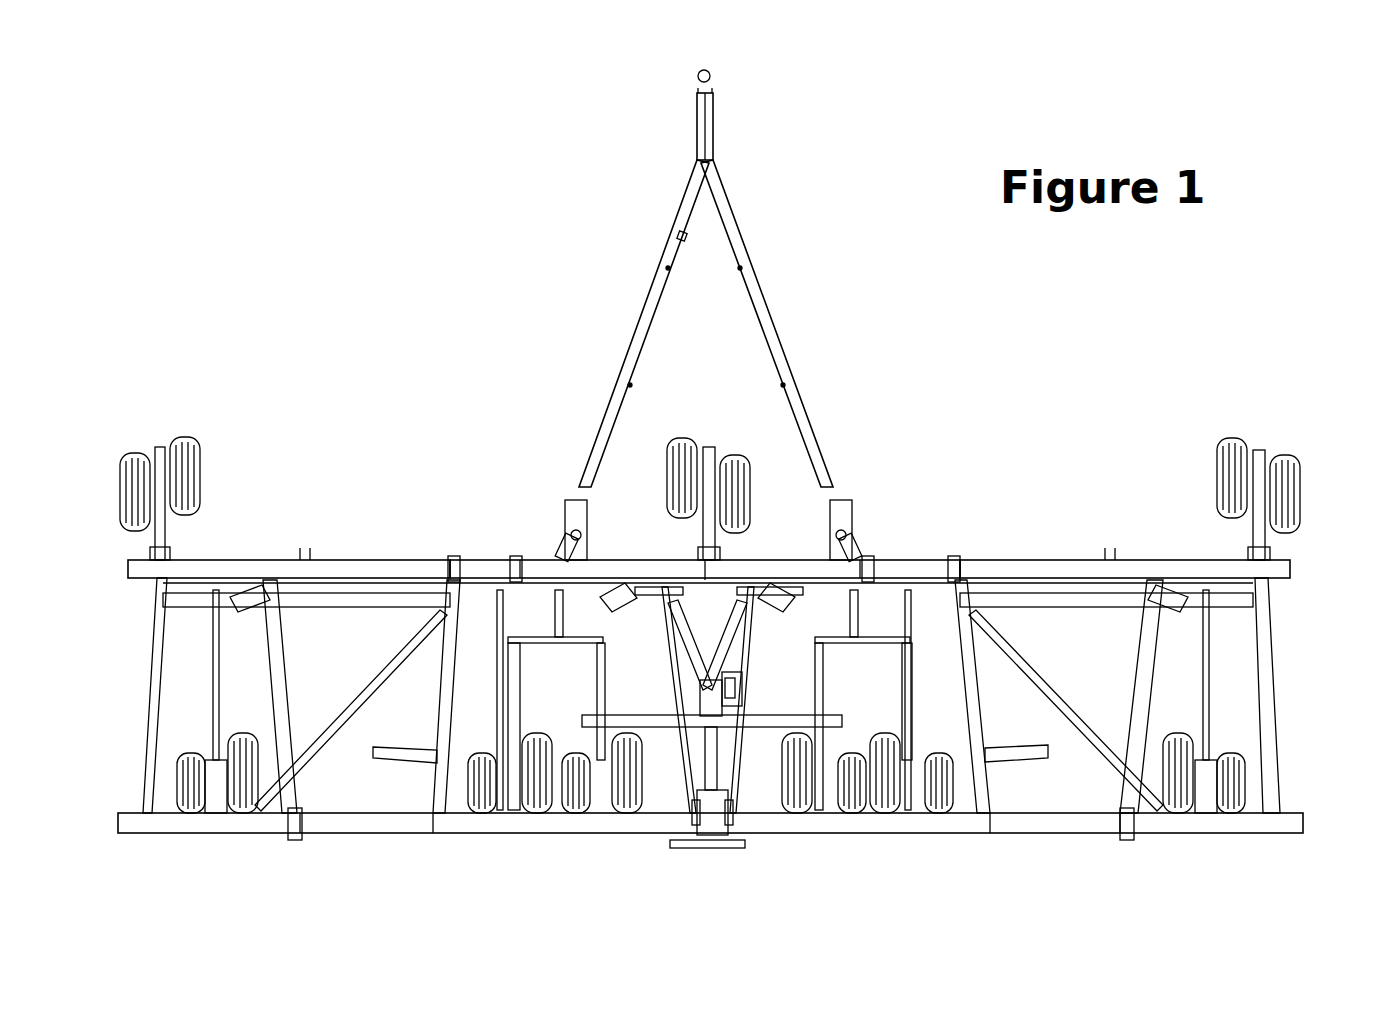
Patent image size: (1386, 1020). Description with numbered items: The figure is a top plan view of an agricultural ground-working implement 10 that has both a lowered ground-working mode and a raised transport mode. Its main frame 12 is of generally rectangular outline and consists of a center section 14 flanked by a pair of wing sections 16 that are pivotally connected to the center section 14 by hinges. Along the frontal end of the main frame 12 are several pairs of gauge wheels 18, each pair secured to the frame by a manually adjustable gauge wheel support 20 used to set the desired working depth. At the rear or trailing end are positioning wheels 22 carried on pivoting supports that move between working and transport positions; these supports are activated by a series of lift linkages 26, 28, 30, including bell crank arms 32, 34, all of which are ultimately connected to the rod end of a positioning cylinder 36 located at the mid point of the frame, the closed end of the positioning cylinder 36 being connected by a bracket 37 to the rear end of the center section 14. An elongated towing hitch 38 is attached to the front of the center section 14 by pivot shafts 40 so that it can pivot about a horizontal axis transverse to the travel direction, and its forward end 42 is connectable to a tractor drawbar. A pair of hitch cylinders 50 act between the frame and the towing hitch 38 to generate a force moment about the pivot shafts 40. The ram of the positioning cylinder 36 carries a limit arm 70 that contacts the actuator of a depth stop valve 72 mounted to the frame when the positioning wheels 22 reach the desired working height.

The agricultural ground-working implement 10 is at (445, 405).
The main frame 12 is at (376, 516).
The center section 14 is at (745, 565).
The wing sections 16 is at (262, 560).
The gauge wheels 18 is at (200, 458).
The gauge wheel support 20 is at (168, 530).
The positioning wheels 22 is at (197, 815).
The lift linkage 26 is at (262, 655).
The lift linkage 28 is at (495, 580).
The lift linkage 30 is at (652, 596).
The bell crank arm 32 is at (246, 610).
The bell crank arm 34 is at (742, 615).
The positioning cylinder 36 is at (718, 792).
The bracket 37 is at (692, 810).
The towing hitch 38 is at (760, 268).
The pivot shafts 40 is at (556, 558).
The forward end 42 is at (712, 84).
The hitch cylinders 50 is at (575, 530).
The limit arm 70 is at (705, 712).
The depth stop valve 72 is at (728, 678).